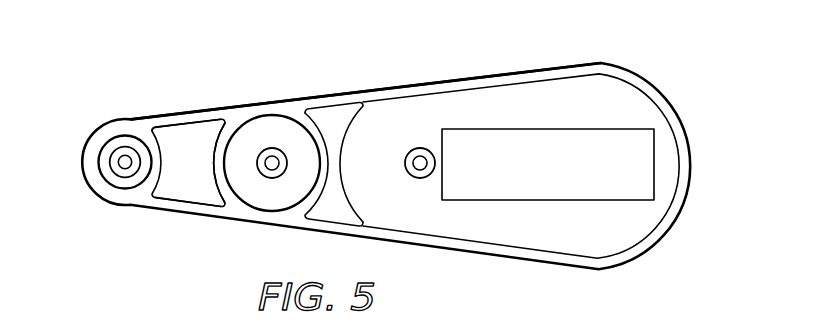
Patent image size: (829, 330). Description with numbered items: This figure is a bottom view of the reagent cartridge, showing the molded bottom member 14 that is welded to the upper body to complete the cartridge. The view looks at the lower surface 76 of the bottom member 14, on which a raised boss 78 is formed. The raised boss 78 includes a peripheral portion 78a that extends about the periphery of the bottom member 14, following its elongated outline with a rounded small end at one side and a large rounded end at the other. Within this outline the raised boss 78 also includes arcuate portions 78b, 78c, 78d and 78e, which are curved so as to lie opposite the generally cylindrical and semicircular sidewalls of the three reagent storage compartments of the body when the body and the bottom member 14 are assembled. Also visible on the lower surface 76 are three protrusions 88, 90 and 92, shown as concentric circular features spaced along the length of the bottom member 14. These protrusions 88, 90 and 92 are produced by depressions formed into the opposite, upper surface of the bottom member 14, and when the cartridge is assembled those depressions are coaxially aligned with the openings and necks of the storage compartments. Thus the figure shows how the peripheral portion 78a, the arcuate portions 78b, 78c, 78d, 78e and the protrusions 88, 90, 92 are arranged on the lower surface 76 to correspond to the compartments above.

The bottom member 14 is at (470, 71).
The lower surface 76 is at (196, 128).
The raised boss 78 is at (671, 108).
The peripheral portion 78a is at (172, 207).
The arcuate portion 78b is at (152, 128).
The arcuate portion 78c is at (221, 192).
The arcuate portion 78d is at (309, 118).
The arcuate portion 78e is at (357, 117).
The protrusion 88 is at (110, 158).
The protrusion 90 is at (269, 149).
The protrusion 92 is at (409, 152).